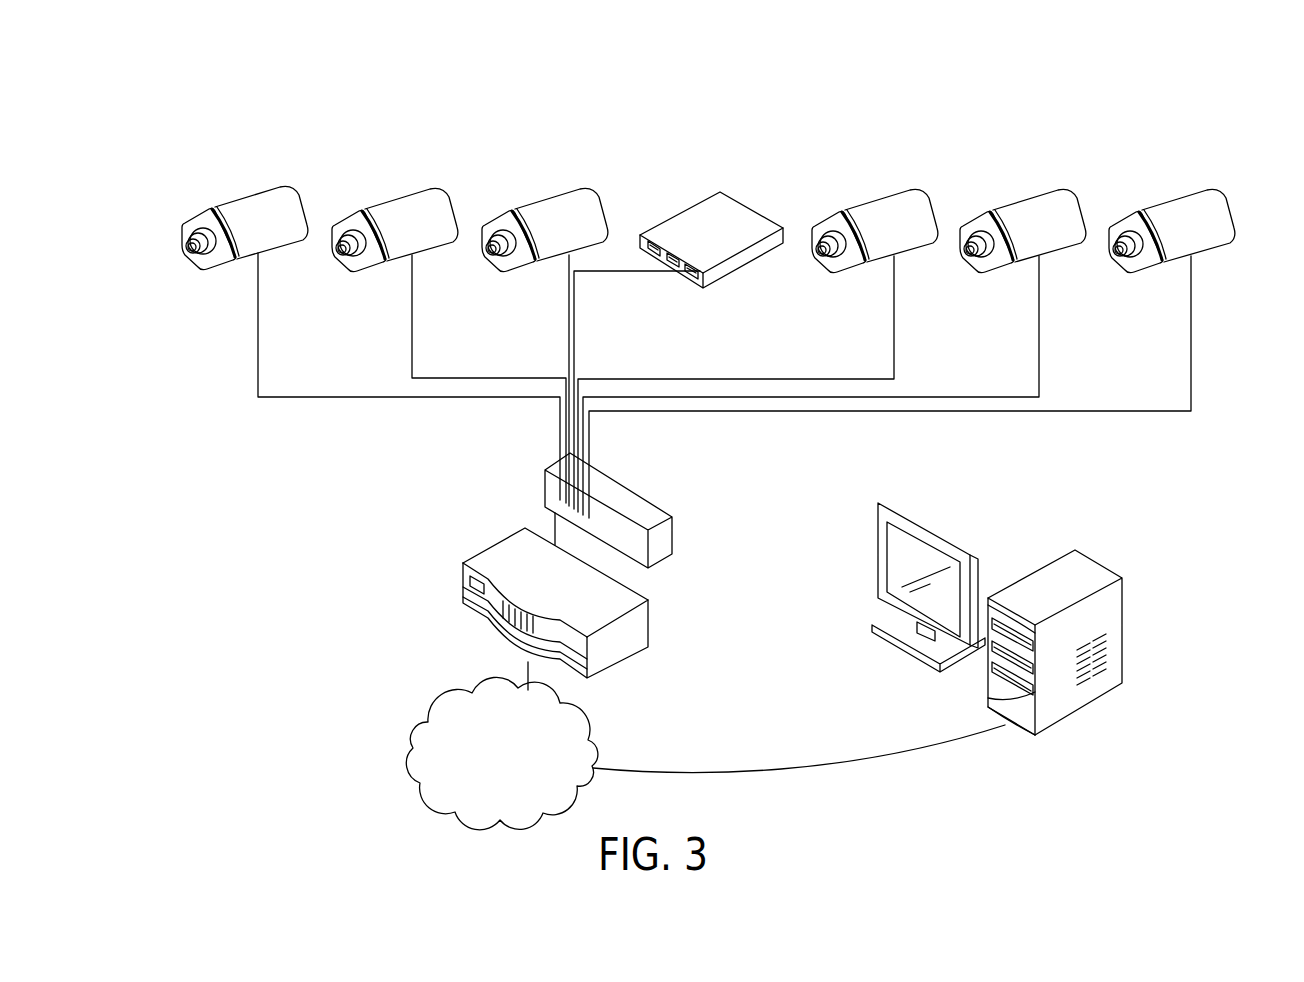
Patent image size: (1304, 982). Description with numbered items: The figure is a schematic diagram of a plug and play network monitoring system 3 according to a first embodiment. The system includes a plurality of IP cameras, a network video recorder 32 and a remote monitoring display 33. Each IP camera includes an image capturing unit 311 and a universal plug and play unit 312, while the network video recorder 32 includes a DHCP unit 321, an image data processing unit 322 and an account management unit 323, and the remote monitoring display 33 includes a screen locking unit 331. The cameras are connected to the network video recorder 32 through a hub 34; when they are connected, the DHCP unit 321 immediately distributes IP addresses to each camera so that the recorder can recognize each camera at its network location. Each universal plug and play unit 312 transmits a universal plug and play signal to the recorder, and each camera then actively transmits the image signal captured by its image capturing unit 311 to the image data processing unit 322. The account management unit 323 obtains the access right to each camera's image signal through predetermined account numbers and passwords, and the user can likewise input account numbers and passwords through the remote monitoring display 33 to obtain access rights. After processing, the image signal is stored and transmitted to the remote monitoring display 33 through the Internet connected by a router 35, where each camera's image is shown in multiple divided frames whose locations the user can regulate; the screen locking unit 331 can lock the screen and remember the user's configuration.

The plug and play network monitoring system 3 is at (80, 78).
The image capturing unit 311 is at (287, 159).
The universal plug and play unit 312 is at (202, 222).
The network video recorder 32 is at (728, 277).
The DHCP unit 321 is at (765, 150).
The image data processing unit 322 is at (774, 178).
The account management unit 323 is at (783, 207).
The remote monitoring display 33 is at (1002, 615).
The screen locking unit 331 is at (1062, 495).
The hub 34 is at (622, 503).
The router 35 is at (637, 637).